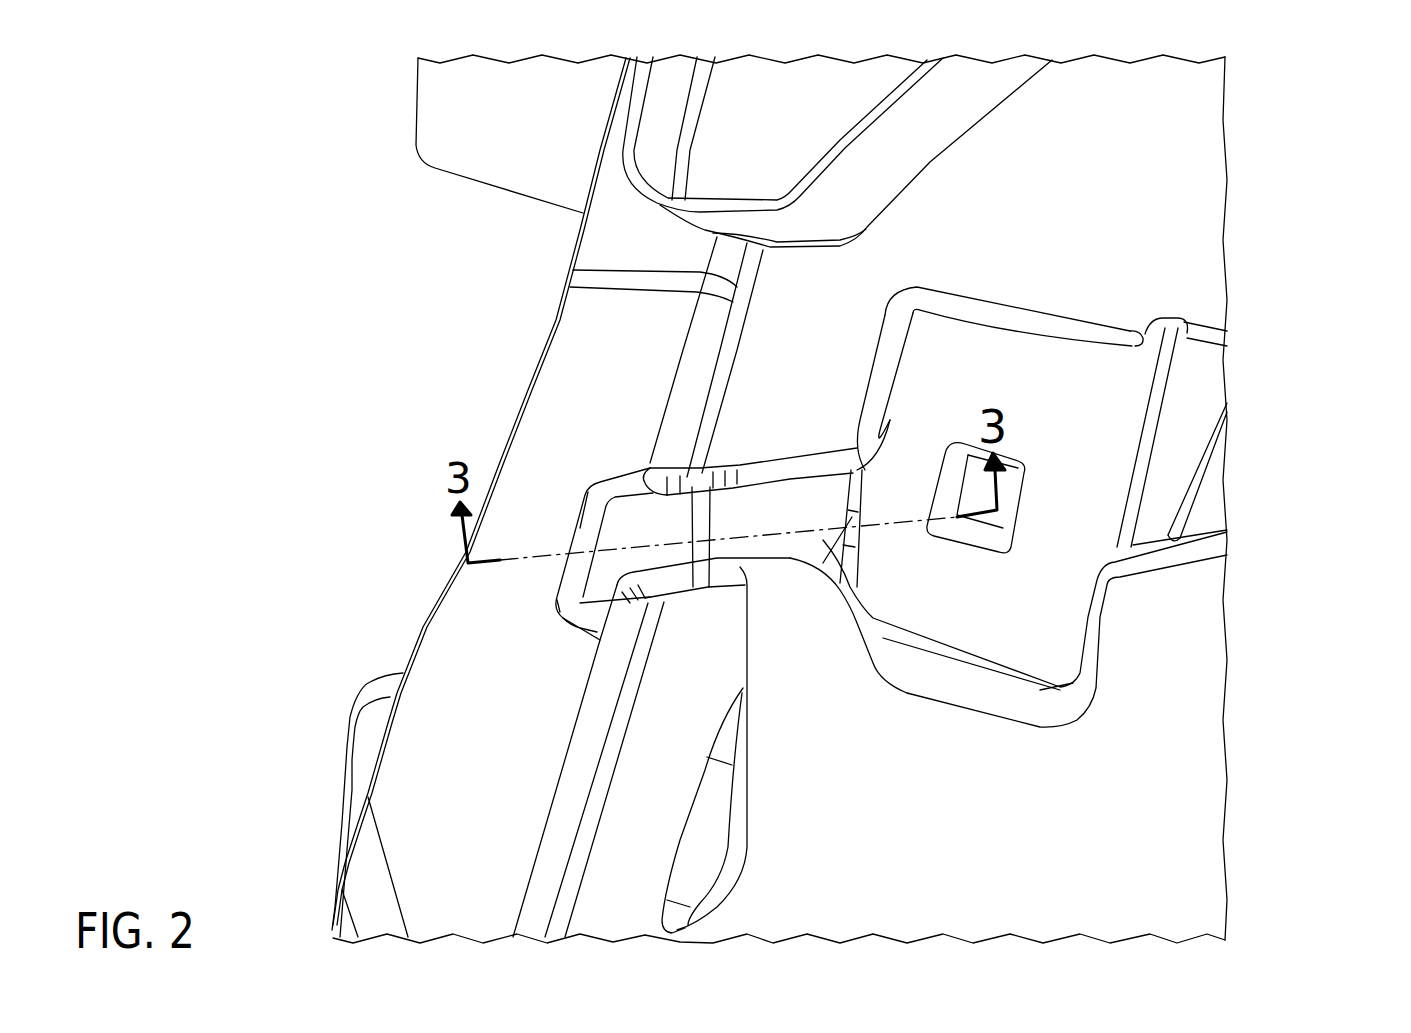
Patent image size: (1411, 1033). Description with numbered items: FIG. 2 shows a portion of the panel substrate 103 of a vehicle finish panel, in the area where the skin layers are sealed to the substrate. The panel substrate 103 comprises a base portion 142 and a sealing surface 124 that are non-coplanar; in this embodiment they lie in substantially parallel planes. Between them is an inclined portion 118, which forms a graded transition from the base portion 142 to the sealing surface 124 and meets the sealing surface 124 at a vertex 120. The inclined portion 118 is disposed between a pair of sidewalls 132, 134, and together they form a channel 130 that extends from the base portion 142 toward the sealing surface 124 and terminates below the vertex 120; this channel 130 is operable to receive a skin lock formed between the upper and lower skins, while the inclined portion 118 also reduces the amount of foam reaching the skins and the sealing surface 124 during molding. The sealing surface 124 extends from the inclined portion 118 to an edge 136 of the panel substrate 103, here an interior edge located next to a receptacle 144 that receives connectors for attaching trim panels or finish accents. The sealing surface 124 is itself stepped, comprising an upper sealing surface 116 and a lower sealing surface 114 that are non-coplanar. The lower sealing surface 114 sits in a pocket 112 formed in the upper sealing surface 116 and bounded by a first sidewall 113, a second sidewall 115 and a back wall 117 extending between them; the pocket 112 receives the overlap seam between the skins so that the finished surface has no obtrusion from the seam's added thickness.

The panel substrate 103 is at (1267, 168).
The pocket 112 is at (557, 622).
The first sidewall 113 is at (570, 608).
The lower sealing surface 114 is at (620, 508).
The second sidewall 115 is at (636, 483).
The upper sealing surface 116 is at (532, 420).
The back wall 117 is at (590, 537).
The inclined portion 118 is at (805, 493).
The vertex 120 is at (697, 575).
The sealing surface 124 is at (575, 745).
The channel 130 is at (760, 512).
The sidewall 132 is at (766, 550).
The sidewall 134 is at (855, 447).
The edge 136 is at (541, 352).
The base portion 142 is at (1065, 637).
The receptacle 144 is at (1017, 462).